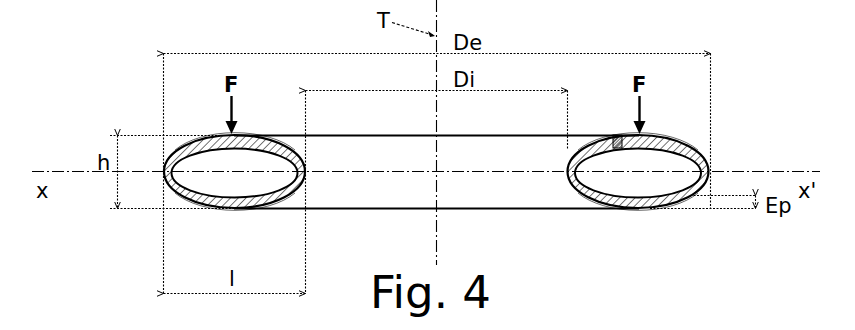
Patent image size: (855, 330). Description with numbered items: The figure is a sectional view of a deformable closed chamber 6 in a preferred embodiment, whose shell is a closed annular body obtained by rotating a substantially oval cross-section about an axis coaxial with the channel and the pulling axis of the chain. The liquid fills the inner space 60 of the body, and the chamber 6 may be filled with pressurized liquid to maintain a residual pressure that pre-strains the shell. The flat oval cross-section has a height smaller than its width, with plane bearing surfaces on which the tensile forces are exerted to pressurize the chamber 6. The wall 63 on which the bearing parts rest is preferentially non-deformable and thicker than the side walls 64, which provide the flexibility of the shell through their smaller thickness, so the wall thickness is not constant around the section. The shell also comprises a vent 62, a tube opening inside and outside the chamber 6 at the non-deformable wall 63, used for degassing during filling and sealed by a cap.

The chamber 6 is at (724, 148).
The inner space 60 is at (243, 194).
The vent 62 is at (614, 136).
The wall 63 is at (246, 137).
The side walls 64 is at (292, 195).